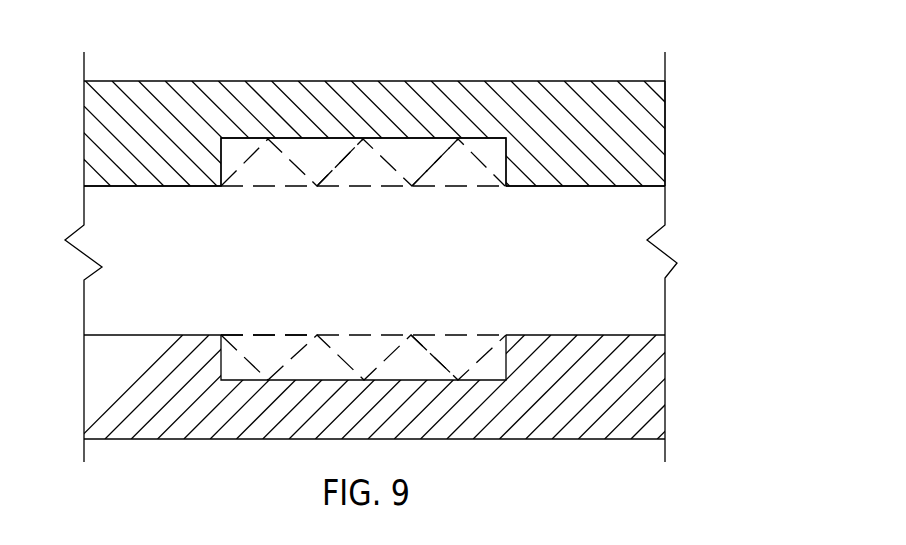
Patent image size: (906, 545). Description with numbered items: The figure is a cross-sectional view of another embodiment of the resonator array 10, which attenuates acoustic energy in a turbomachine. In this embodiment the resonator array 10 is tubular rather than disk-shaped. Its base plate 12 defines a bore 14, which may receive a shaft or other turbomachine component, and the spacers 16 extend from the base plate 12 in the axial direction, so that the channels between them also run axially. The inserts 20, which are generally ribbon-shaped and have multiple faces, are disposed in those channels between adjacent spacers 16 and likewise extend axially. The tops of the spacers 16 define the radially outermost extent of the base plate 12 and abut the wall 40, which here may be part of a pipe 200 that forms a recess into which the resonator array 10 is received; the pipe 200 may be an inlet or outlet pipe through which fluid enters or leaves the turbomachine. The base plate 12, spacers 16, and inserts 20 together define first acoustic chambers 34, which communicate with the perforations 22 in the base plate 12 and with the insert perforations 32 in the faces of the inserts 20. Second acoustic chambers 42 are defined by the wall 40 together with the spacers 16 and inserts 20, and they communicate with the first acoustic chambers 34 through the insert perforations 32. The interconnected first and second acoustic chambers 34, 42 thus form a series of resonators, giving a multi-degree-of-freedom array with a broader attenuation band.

The resonator array 10 is at (571, 47).
The base plate 12 is at (488, 188).
The bore 14 is at (493, 333).
The spacers 16 is at (436, 146).
The inserts 20 is at (352, 148).
The base plate perforations 22 is at (256, 326).
The insert perforations 32 is at (445, 357).
The first acoustic chambers 34 is at (375, 180).
The wall 40 is at (233, 82).
The second acoustic chambers 42 is at (422, 166).
The pipe 200 is at (654, 99).